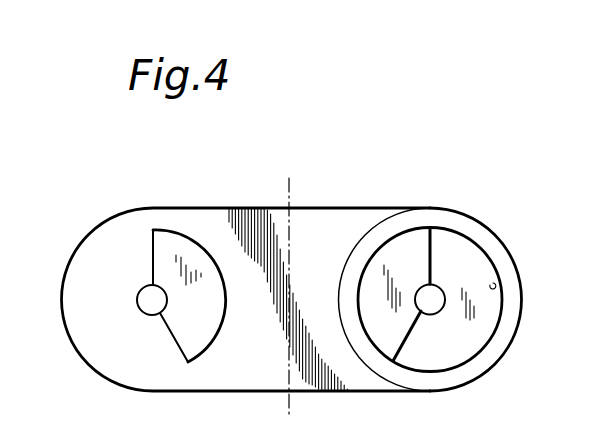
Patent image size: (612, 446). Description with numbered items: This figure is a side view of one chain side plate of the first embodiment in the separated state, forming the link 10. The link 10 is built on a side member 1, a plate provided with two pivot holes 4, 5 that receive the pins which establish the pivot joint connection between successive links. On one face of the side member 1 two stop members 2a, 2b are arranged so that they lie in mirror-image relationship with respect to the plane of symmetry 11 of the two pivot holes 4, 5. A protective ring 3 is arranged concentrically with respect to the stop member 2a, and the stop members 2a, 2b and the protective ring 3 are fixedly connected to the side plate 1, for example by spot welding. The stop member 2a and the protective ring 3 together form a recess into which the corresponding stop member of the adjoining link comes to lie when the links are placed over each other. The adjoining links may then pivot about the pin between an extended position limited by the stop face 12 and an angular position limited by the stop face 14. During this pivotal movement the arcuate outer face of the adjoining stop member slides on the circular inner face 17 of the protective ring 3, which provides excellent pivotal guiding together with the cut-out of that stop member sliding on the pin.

The side member 1 is at (333, 222).
The stop member 2a is at (408, 247).
The stop member 2b is at (168, 245).
The protective ring 3 is at (490, 243).
The hole 4 is at (142, 297).
The hole 5 is at (442, 304).
The link 10 is at (297, 203).
The plane of symmetry 11 is at (288, 398).
The stop face 12 is at (443, 245).
The stop face 14 is at (412, 340).
The circular inner face 17 is at (492, 286).